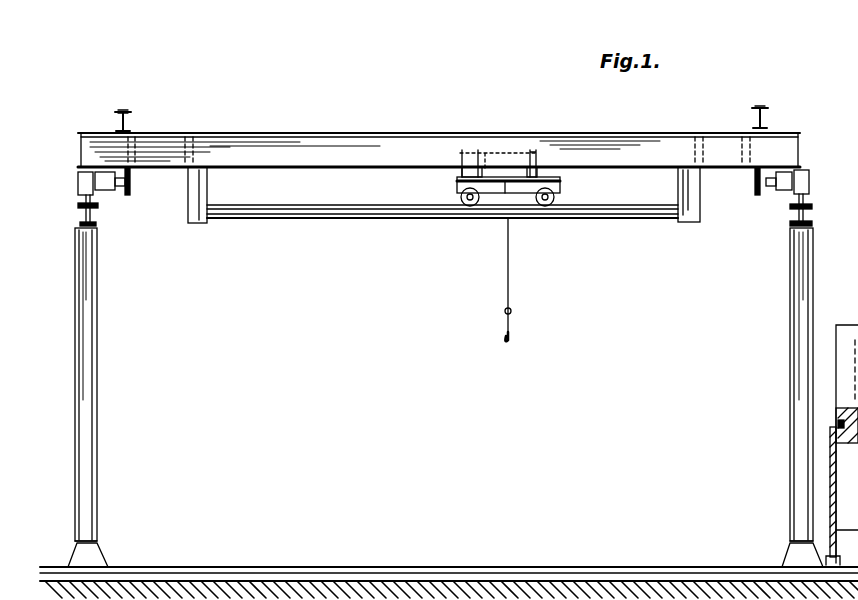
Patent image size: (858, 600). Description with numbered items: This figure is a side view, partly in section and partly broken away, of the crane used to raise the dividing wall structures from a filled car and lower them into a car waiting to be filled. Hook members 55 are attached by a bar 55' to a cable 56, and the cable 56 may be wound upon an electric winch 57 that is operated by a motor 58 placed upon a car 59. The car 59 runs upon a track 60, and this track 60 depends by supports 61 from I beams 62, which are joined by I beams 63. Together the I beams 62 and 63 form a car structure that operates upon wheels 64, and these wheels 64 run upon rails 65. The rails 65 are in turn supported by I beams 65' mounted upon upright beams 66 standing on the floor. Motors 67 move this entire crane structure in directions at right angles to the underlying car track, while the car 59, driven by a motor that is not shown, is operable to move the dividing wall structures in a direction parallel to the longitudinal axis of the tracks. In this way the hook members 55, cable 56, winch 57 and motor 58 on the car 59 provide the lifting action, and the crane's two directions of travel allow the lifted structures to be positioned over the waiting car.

The hook members 55 is at (535, 331).
The bar 55' is at (533, 302).
The cable 56 is at (510, 276).
The electric winch 57 is at (521, 152).
The motor 58 is at (470, 152).
The car 59 is at (560, 191).
The track 60 is at (300, 218).
The supports 61 is at (188, 203).
The I beams 62 is at (322, 133).
The I beams 63 is at (126, 112).
The wheels 64 is at (78, 184).
The rails 65 is at (467, 204).
The I beams 65' is at (469, 226).
The upright beams 66 is at (90, 275).
The motors 67 is at (185, 136).